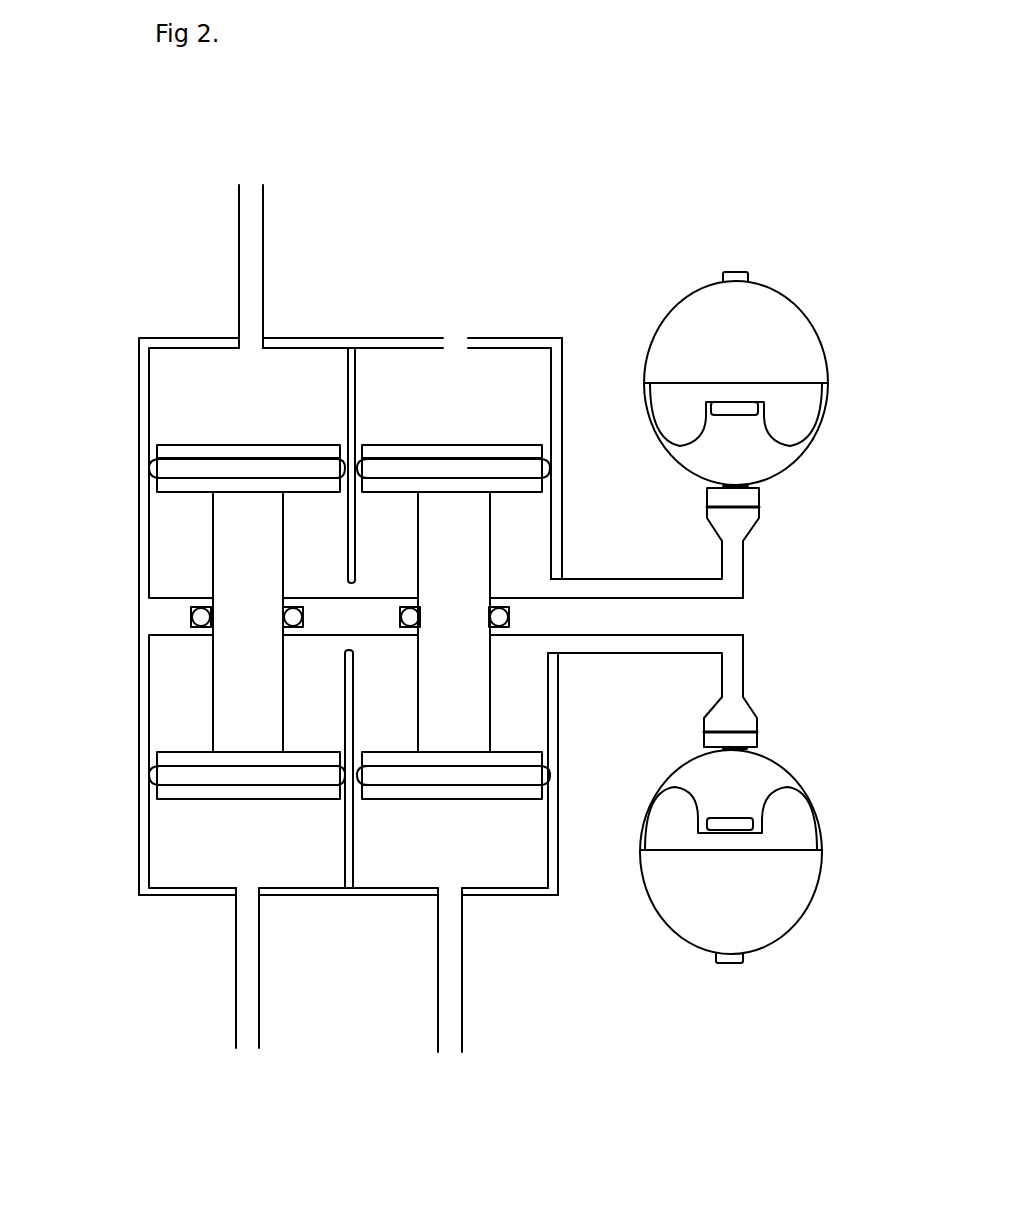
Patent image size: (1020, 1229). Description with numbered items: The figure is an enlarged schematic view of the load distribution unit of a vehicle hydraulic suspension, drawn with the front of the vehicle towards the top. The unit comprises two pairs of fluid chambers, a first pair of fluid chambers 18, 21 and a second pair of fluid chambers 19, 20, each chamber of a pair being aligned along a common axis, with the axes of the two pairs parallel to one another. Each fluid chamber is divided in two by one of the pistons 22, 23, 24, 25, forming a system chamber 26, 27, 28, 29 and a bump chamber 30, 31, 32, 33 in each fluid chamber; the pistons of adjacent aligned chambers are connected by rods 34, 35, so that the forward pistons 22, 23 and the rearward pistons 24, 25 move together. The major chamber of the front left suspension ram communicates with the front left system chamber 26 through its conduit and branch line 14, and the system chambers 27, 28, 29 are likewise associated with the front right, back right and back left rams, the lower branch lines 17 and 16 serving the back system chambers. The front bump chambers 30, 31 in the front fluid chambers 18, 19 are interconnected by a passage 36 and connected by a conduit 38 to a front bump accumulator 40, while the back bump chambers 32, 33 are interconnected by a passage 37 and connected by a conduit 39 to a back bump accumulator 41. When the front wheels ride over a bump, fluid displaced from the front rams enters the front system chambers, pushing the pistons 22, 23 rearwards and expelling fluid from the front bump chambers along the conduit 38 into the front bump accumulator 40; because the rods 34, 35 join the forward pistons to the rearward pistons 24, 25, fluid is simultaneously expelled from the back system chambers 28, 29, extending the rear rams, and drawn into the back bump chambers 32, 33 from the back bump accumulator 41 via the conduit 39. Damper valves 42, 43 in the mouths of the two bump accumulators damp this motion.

The branch line 14 is at (250, 302).
The branch line 16 is at (440, 957).
The branch line 17 is at (251, 947).
The fluid chamber 18 is at (140, 403).
The fluid chamber 19 is at (557, 362).
The fluid chamber 20 is at (553, 843).
The fluid chamber 21 is at (140, 865).
The piston 22 is at (175, 455).
The piston 23 is at (505, 445).
The piston 24 is at (505, 800).
The piston 25 is at (163, 792).
The system chamber 26 is at (172, 372).
The system chamber 27 is at (488, 363).
The system chamber 28 is at (486, 853).
The system chamber 29 is at (207, 870).
The bump chamber 30 is at (157, 572).
The bump chamber 31 is at (538, 552).
The bump chamber 32 is at (528, 708).
The bump chamber 33 is at (165, 660).
The rod 34 is at (225, 530).
The rod 35 is at (457, 532).
The passage 36 is at (343, 590).
The passage 37 is at (345, 642).
The conduit 38 is at (730, 592).
The conduit 39 is at (730, 643).
The front bump accumulator 40 is at (777, 290).
The back bump accumulator 41 is at (780, 937).
The damper valve 42 is at (750, 497).
The damper valve 43 is at (750, 735).